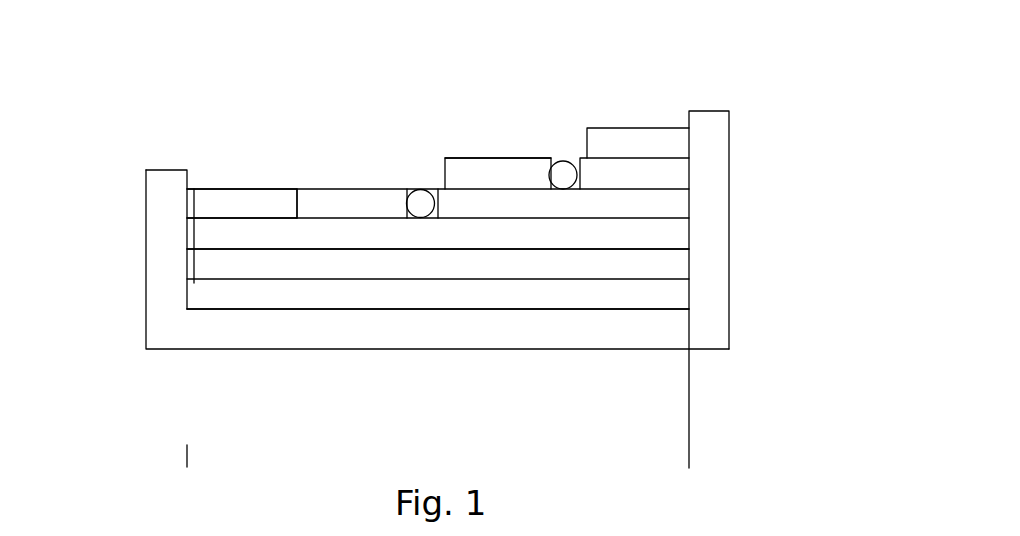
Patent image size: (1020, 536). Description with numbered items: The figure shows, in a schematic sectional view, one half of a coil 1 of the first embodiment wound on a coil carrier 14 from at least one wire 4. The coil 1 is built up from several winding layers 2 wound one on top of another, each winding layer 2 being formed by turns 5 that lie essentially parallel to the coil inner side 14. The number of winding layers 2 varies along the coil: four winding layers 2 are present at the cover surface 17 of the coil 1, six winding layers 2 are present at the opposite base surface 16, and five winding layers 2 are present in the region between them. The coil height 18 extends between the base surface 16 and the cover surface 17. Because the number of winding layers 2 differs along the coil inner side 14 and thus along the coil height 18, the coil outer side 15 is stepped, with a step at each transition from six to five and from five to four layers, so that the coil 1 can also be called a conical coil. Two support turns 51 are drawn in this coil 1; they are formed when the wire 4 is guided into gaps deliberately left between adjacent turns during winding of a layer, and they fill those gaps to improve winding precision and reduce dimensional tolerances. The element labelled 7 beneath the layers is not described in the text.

The coil 1 is at (387, 107).
The winding layers 2 is at (629, 227).
The wire 4 is at (213, 194).
The turns 5 is at (259, 266).
The base plate 7 is at (490, 325).
The coil carrier 14 is at (520, 321).
The coil outer side 15 is at (529, 141).
The base surface 16 is at (676, 234).
The cover surface 17 is at (171, 262).
The coil height 18 is at (689, 455).
The support turns 51 is at (563, 175).